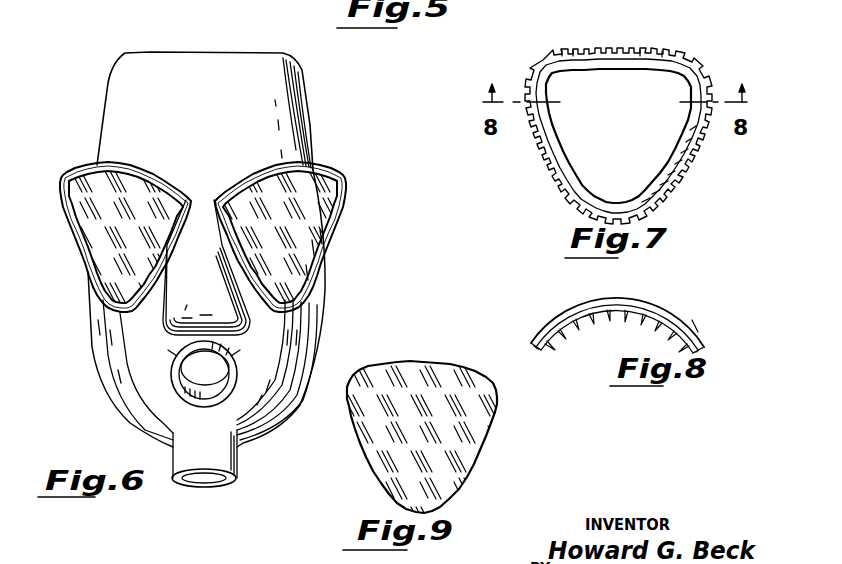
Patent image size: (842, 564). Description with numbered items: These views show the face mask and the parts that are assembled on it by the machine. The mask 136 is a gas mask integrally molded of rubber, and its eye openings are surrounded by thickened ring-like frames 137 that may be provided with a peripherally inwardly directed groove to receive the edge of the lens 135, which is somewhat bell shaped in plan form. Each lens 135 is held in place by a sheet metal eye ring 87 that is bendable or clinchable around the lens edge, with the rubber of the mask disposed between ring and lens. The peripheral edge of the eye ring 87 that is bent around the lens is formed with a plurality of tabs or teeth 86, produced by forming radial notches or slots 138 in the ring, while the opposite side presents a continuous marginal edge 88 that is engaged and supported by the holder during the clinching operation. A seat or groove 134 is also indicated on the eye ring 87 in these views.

In FIG. 7, the tabs 86 is at (596, 51).
In FIG. 8, the tabs 86 is at (611, 311).
In FIG. 6, the eye ring 87 is at (73, 170).
In FIG. 7, the eye ring 87 is at (672, 163).
In FIG. 8, the eye ring 87 is at (703, 336).
In FIG. 7, the continuous marginal edge 88 is at (560, 158).
In FIG. 8, the continuous marginal edge 88 is at (690, 318).
In FIG. 7, the lens seat 134 is at (583, 176).
In FIG. 8, the lens seat 134 is at (550, 313).
In FIG. 6, the lens 135 is at (93, 250).
In FIG. 9, the lens 135 is at (486, 424).
In FIG. 6, the mask 136 is at (123, 63).
In FIG. 6, the ring-like frames 137 is at (72, 212).
In FIG. 7, the radial notches 138 is at (664, 55).